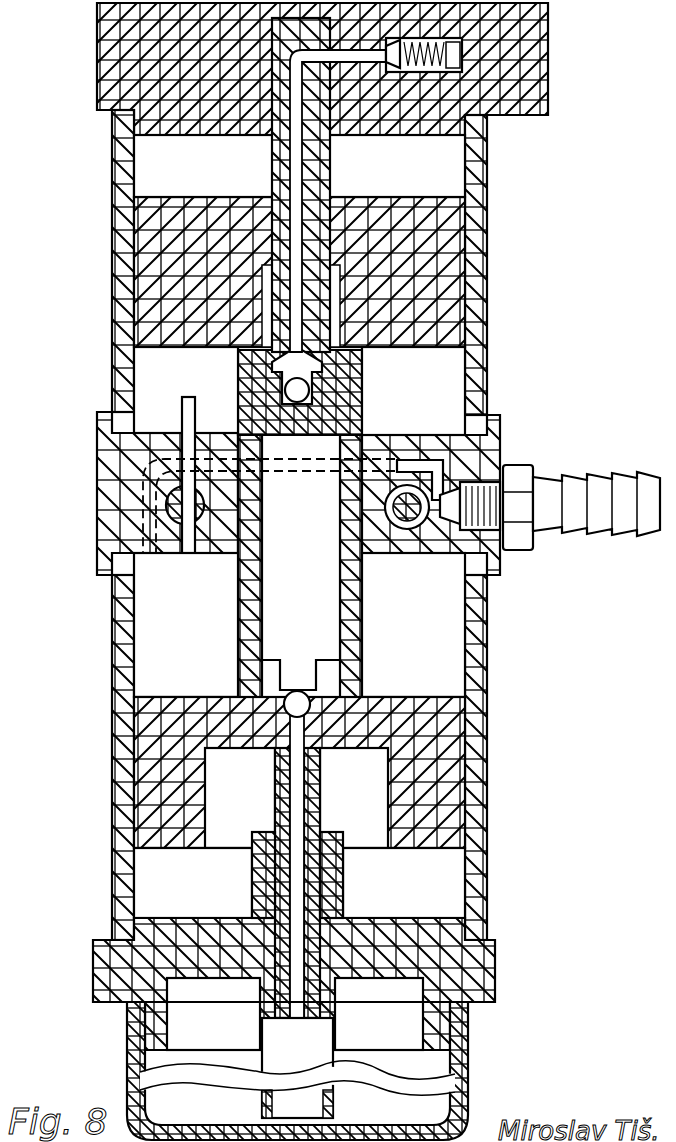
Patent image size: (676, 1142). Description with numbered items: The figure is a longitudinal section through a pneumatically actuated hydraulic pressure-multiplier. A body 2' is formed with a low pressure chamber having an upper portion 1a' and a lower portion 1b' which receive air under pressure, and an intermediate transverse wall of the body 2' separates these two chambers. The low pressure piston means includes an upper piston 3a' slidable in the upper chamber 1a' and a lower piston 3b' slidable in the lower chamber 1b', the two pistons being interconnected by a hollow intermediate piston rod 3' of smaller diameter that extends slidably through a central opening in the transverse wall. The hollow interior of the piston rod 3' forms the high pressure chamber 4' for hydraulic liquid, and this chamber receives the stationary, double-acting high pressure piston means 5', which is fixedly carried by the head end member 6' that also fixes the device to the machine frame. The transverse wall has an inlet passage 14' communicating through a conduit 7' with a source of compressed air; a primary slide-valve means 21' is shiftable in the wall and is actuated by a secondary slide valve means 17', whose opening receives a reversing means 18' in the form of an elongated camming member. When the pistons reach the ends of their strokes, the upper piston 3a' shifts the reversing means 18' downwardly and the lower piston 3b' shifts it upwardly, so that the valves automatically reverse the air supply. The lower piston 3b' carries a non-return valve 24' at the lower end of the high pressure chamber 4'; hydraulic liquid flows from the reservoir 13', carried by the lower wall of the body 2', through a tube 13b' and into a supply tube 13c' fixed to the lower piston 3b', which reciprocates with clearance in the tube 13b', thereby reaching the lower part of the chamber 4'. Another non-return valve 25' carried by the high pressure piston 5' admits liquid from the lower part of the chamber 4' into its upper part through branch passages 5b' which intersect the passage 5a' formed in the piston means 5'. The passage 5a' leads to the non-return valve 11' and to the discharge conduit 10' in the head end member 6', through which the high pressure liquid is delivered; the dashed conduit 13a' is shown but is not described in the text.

The head end member 6' is at (342, 69).
The discharge conduit 10' is at (381, 37).
The non-return valve 11' is at (443, 39).
The passage 5a' is at (310, 201).
The upper low pressure chamber portion 1a' is at (299, 166).
The upper piston 3a' is at (330, 272).
The branch passages 5b' is at (315, 377).
The high pressure piston means 5' is at (273, 210).
The intermediate piston rod 3' is at (410, 391).
The non-return valve 25' is at (296, 421).
The body 2' is at (313, 523).
The conduit 7' is at (560, 500).
The reversing means 18' is at (170, 480).
The secondary slide valve means 17' is at (124, 505).
The primary slide-valve means 21' is at (402, 535).
The inlet passage 14' is at (428, 523).
The high pressure chamber 4' is at (301, 562).
The lower low pressure chamber portion 1b' is at (413, 625).
The non-return valve 24' is at (297, 686).
The lower piston 3b' is at (328, 772).
The dashed conduit 13a' is at (226, 717).
The supply tube 13c' is at (317, 857).
The tube 13b' is at (297, 1068).
The reservoir 13' is at (297, 1071).